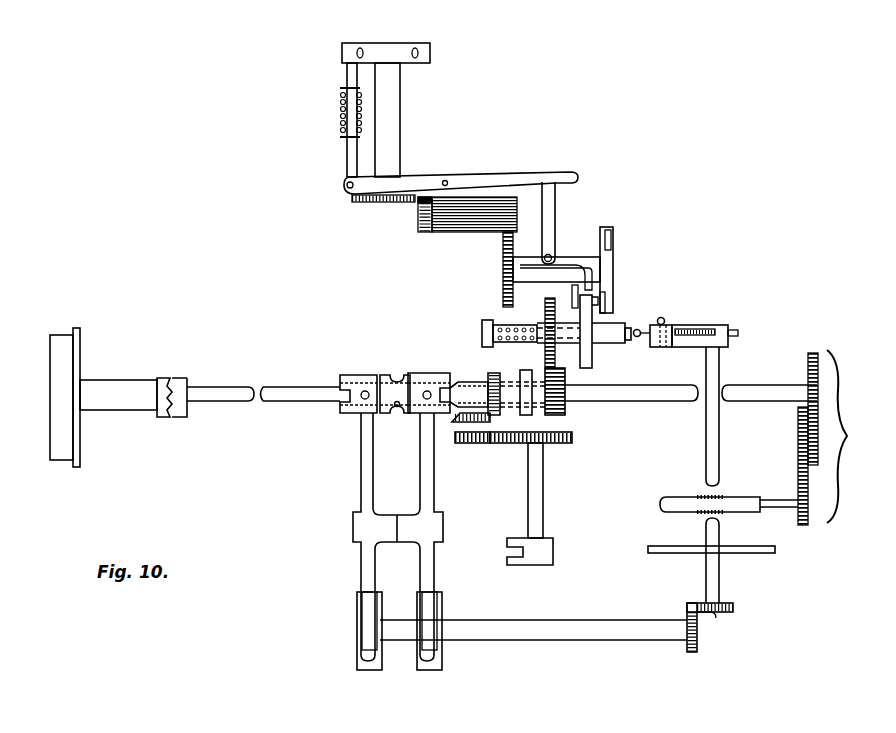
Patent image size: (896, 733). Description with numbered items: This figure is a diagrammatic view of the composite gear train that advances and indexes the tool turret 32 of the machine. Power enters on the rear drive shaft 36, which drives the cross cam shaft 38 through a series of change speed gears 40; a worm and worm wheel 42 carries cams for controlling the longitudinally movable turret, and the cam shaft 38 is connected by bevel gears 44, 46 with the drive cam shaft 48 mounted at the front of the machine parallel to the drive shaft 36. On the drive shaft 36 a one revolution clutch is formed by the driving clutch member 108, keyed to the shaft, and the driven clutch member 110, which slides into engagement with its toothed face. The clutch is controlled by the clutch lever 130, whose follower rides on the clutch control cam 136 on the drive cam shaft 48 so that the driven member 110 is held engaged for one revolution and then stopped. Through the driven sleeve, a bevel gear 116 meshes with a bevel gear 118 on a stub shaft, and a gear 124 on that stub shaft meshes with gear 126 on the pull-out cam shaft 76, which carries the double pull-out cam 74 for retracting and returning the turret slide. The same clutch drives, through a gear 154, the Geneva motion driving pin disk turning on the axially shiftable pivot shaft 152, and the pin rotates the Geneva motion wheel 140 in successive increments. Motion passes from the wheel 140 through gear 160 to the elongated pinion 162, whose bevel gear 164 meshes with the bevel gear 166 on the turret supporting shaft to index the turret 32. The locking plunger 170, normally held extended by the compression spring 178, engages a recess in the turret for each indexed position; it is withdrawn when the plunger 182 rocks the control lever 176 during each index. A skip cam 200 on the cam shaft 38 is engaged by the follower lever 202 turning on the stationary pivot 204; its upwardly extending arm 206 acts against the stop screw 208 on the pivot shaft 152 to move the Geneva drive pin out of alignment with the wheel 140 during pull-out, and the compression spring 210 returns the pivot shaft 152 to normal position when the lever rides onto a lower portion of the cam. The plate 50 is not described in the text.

The tool turret 32 is at (428, 44).
The locking plunger 170 is at (348, 72).
The compression spring 178 is at (341, 117).
The control lever 176 is at (481, 177).
The bevel gear 166 is at (368, 203).
The bevel gear 164 is at (420, 218).
The elongated pinion 162 is at (460, 235).
The gear 160 is at (503, 285).
The plunger 182 is at (550, 212).
The Geneva motion wheel 140 is at (614, 240).
The pivot shaft 152 is at (545, 313).
The compression spring 210 is at (528, 343).
The stop screw 208 is at (632, 327).
The upwardly extending arm 206 is at (645, 338).
The stationary pivot 204 is at (668, 322).
The follower lever 202 is at (682, 347).
The skip cam 200 is at (688, 328).
The cross cam shaft 38 is at (718, 366).
The rear drive shaft 36 is at (228, 388).
The driving clutch member 108 is at (392, 375).
The driven clutch member 110 is at (432, 373).
The bevel gear 116 is at (492, 380).
The bevel gear 118 is at (456, 422).
The gear 124 is at (482, 443).
The gear 126 is at (572, 440).
The gear 154 is at (566, 412).
The clutch lever 130 is at (437, 500).
The clutch control cam 136 is at (430, 670).
The pull-out cam shaft 76 is at (544, 495).
The double pull-out cam 74 is at (545, 566).
The drive cam shaft 48 is at (612, 641).
The worm and worm wheel 42 is at (670, 497).
The change speed gears 40 is at (836, 437).
The plate 50 is at (748, 554).
The bevel gear 44 is at (720, 613).
The bevel gear 46 is at (697, 640).